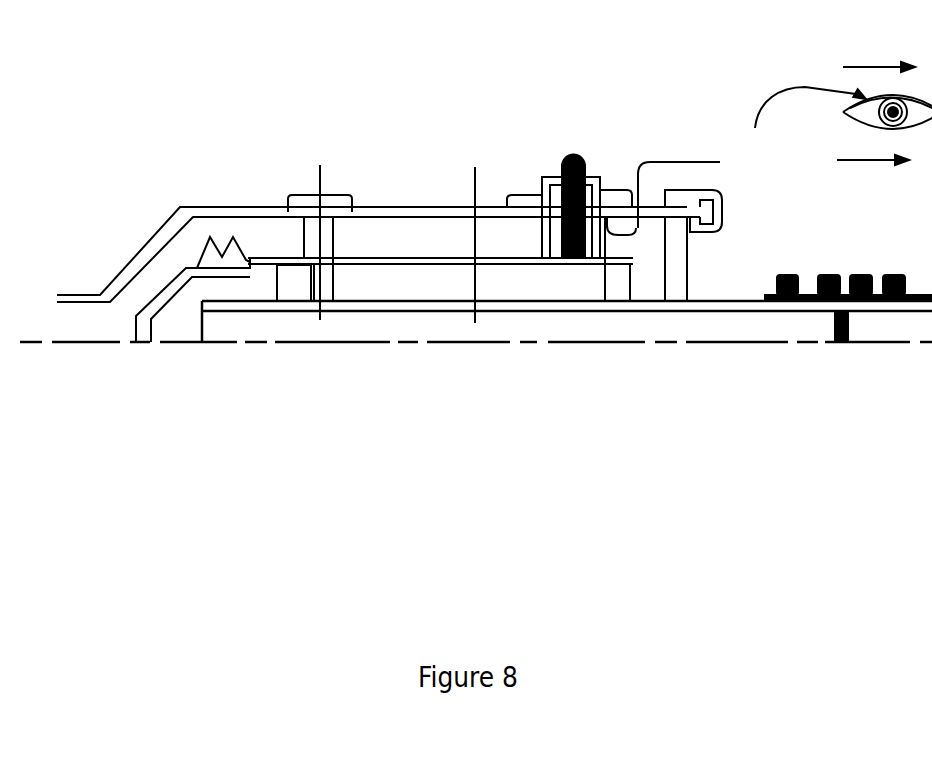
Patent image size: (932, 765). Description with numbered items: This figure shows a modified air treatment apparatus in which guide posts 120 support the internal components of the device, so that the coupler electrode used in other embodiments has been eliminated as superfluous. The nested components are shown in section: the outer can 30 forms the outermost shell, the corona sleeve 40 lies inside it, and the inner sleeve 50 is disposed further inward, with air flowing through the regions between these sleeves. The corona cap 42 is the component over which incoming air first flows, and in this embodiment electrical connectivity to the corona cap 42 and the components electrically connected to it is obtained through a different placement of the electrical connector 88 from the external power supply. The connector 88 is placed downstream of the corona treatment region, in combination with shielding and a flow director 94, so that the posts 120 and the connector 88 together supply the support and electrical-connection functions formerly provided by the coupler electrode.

The outer can 30 is at (128, 259).
The corona sleeve 40 is at (430, 252).
The corona cap 42 is at (169, 300).
The inner sleeve 50 is at (445, 272).
The electrical connector 88 is at (631, 258).
The flow director 94 is at (700, 220).
The guide posts 120 is at (462, 173).